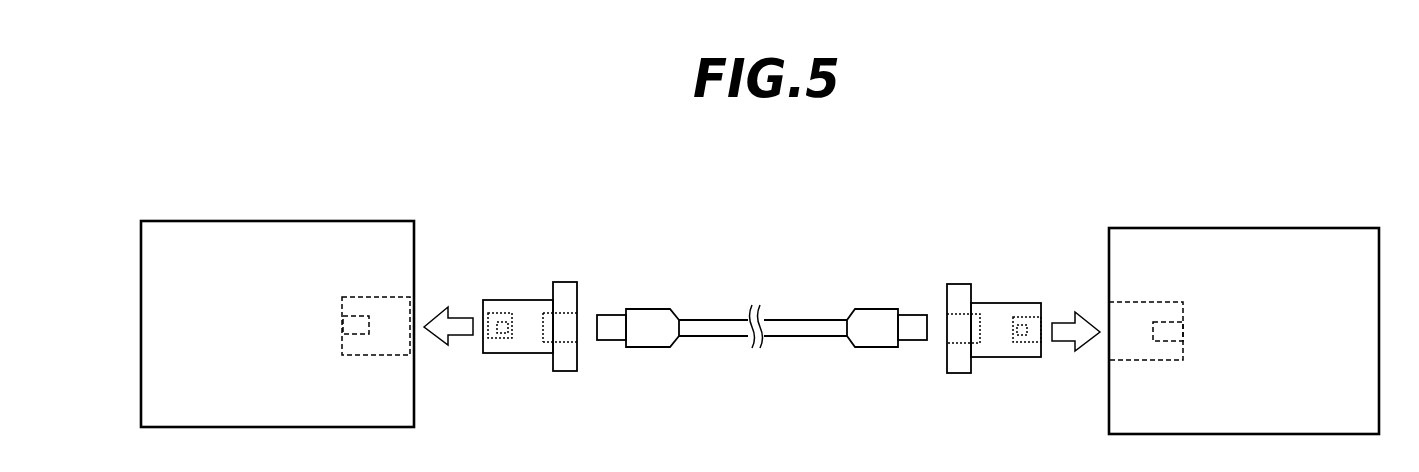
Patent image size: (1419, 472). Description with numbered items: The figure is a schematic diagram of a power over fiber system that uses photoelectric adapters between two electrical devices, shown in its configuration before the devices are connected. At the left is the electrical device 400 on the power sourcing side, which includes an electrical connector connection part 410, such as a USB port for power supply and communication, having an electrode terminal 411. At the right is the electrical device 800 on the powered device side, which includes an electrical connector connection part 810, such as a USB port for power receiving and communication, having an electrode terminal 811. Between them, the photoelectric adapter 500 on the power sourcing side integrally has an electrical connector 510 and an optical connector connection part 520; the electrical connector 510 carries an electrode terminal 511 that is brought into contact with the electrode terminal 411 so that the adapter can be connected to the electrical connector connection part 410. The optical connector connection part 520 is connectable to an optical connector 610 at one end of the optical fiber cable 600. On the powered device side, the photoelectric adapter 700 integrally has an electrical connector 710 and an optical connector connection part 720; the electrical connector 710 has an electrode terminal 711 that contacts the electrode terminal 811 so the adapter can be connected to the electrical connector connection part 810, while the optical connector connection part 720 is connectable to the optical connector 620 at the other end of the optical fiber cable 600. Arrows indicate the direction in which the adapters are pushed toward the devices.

The electrical device 400 is at (193, 221).
The electrical connector connection part 410 is at (375, 297).
The electrode terminal 411 is at (357, 316).
The photoelectric adapter 500 is at (570, 240).
The electrical connector 510 is at (505, 300).
The electrode terminal 511 is at (505, 333).
The optical connector connection part 520 is at (563, 340).
The optical fiber cable 600 is at (784, 239).
The optical connector 610 is at (649, 309).
The optical connector 620 is at (875, 309).
The photoelectric adapter 700 is at (954, 243).
The electrical connector 710 is at (1008, 303).
The electrode terminal 711 is at (1023, 337).
The optical connector connection part 720 is at (961, 345).
The electrical device 800 is at (1325, 228).
The electrical connector connection part 810 is at (1147, 302).
The electrode terminal 811 is at (1168, 322).